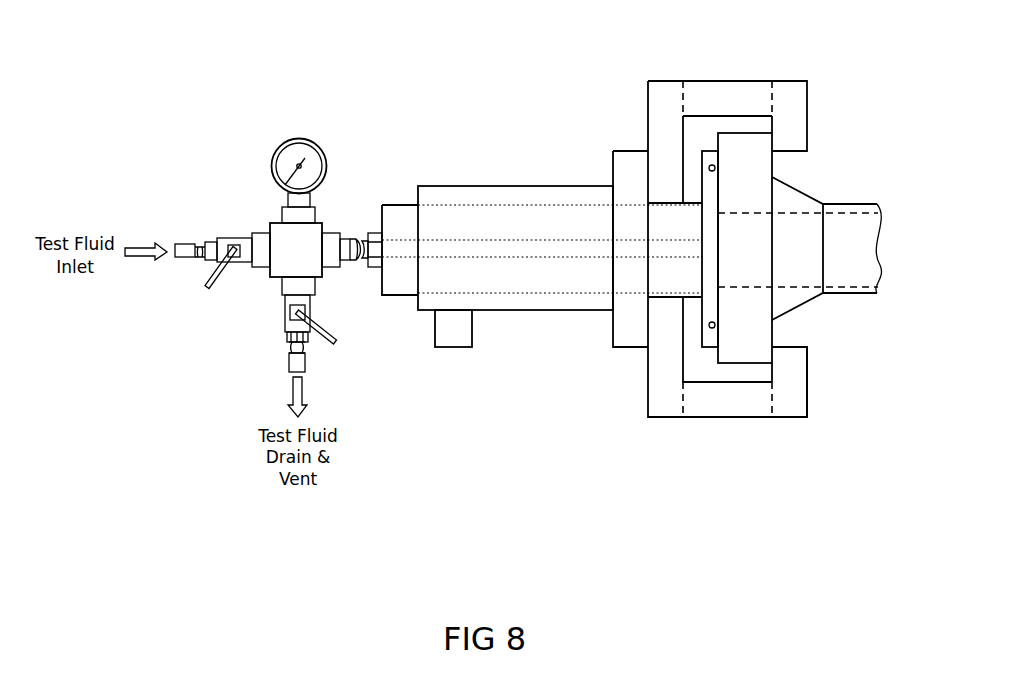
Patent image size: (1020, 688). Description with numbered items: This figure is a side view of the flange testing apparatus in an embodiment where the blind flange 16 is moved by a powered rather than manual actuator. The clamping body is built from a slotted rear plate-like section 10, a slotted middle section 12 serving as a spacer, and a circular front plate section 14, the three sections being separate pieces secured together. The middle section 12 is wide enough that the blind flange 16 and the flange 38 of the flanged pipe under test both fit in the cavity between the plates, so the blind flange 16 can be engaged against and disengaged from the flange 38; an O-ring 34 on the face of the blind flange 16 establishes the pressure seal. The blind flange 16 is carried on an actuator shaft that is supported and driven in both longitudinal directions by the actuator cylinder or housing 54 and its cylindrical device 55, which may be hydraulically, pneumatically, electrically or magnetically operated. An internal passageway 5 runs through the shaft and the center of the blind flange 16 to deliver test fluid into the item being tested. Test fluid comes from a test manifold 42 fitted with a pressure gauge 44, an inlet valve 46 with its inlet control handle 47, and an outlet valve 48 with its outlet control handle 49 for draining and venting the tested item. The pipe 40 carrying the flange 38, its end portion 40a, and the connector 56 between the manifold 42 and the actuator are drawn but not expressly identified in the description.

The internal passageway 5 is at (486, 247).
The slotted rear plate-like section 10 is at (808, 93).
The slotted middle section 12 is at (750, 418).
The front plate section 14 is at (667, 418).
The blind flange 16 is at (710, 350).
The O-ring 34 is at (709, 165).
The flange 38 is at (745, 150).
The pipe 40 is at (850, 295).
The pipe end 40a is at (863, 287).
The test manifold 42 is at (278, 280).
The pressure gauge 44 is at (277, 143).
The inlet valve 46 is at (187, 242).
The inlet control handle 47 is at (200, 292).
The outlet valve 48 is at (307, 362).
The outlet control handle 49 is at (338, 340).
The actuator cylinder 54 is at (543, 186).
The cylindrical device 55 is at (457, 347).
The connector fitting 56 is at (382, 222).